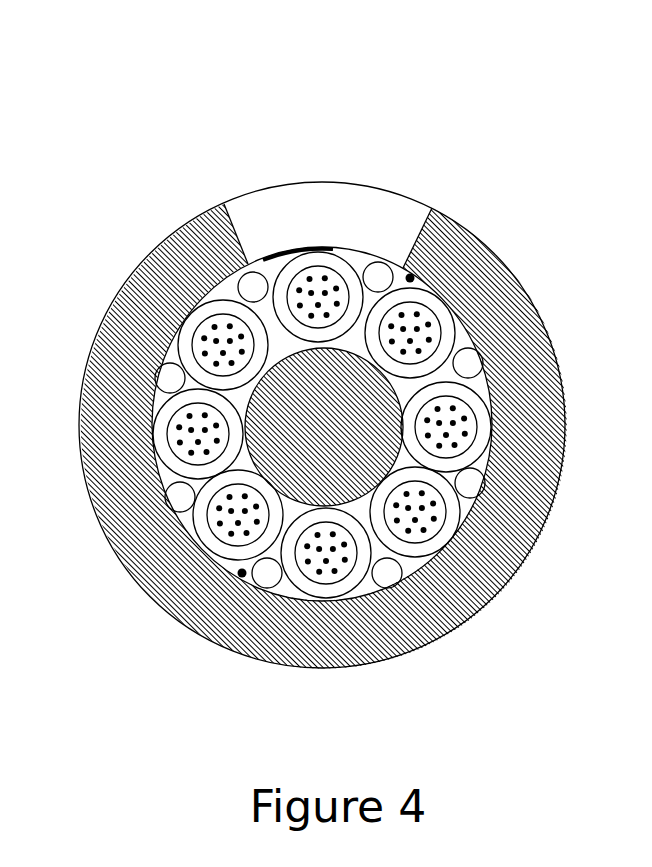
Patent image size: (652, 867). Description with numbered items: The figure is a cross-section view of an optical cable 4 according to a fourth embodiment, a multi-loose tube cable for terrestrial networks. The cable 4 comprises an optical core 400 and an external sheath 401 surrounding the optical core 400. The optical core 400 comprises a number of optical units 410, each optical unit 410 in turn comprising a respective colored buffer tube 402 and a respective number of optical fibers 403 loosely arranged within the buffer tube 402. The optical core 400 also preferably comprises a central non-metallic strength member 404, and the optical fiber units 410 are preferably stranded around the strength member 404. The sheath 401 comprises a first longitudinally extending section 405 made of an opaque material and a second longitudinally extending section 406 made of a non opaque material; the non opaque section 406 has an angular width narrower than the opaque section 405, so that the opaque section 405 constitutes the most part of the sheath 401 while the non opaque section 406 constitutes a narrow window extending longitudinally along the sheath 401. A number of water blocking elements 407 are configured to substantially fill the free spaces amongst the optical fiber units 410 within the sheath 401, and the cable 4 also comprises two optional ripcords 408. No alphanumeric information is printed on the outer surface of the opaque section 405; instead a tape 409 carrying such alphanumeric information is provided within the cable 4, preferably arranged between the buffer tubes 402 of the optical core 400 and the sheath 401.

The optical cable 4 is at (132, 122).
The optical core 400 is at (185, 298).
The external sheath 401 is at (423, 173).
The colored buffer tube 402 is at (445, 303).
The optical fibers 403 is at (430, 333).
The central non-metallic strength member 404 is at (398, 458).
The first longitudinally extending section 405 is at (102, 320).
The second longitudinally extending section 406 is at (335, 182).
The water blocking elements 407 is at (487, 495).
The ripcords 408 is at (410, 278).
The tape 409 is at (285, 252).
The optical unit 410 is at (460, 320).